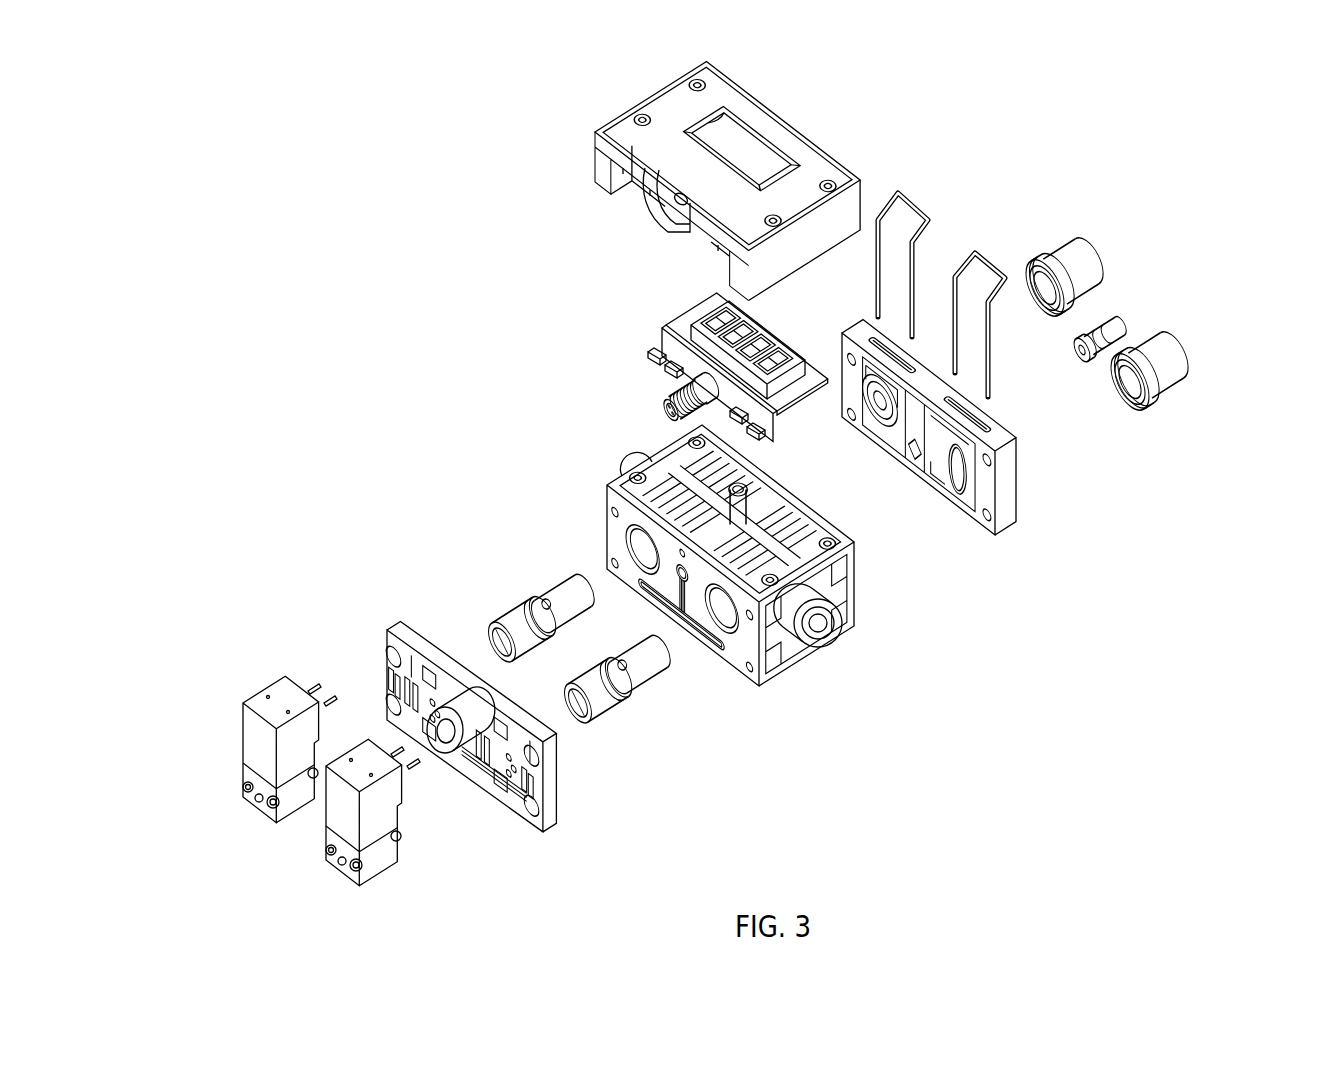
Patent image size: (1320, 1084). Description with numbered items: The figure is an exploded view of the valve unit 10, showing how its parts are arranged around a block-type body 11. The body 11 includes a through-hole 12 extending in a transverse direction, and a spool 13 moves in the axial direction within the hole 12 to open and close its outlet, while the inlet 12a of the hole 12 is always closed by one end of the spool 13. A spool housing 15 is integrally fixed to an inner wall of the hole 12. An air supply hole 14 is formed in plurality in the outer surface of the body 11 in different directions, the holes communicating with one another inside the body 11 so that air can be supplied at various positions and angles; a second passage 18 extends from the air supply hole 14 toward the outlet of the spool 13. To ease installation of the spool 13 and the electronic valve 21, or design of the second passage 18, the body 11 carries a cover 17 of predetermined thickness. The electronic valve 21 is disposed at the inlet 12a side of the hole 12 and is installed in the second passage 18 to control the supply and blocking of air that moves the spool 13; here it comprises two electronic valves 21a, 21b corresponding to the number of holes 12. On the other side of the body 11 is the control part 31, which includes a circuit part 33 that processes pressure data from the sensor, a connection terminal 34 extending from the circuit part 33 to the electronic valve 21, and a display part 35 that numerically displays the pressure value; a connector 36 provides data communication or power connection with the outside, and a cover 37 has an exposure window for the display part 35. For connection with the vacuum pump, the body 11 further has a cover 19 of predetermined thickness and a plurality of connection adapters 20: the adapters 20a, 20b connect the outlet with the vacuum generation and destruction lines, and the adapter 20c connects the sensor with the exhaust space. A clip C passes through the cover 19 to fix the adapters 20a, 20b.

The valve unit 10 is at (334, 238).
The block-type body 11 is at (700, 588).
The through-hole 12 is at (652, 559).
The inlet 12a is at (620, 550).
The spool 13 is at (492, 642).
The air supply hole 14 is at (628, 472).
The spool housing 15 is at (512, 603).
The cover 17 is at (549, 796).
The second passage 18 is at (652, 606).
The cover 19 is at (1012, 496).
The connection adapter 20 is at (1188, 413).
The connection adapter 20a is at (1097, 262).
The connection adapter 20b is at (1186, 358).
The connection adapter 20c is at (1130, 322).
The electronic valve 21 is at (224, 704).
The electronic valve 21a is at (258, 812).
The electronic valve 21b is at (342, 872).
The control part 31 is at (663, 307).
The circuit part 33 is at (790, 402).
The connection terminal 34 is at (648, 352).
The display part 35 is at (780, 328).
The connector 36 is at (660, 412).
The cover 37 is at (783, 120).
The clip C is at (992, 250).